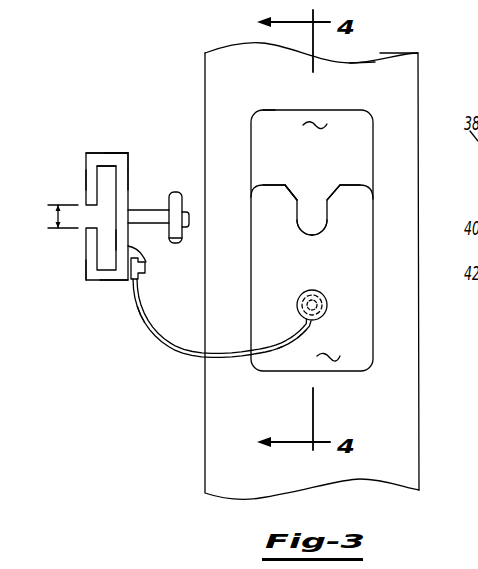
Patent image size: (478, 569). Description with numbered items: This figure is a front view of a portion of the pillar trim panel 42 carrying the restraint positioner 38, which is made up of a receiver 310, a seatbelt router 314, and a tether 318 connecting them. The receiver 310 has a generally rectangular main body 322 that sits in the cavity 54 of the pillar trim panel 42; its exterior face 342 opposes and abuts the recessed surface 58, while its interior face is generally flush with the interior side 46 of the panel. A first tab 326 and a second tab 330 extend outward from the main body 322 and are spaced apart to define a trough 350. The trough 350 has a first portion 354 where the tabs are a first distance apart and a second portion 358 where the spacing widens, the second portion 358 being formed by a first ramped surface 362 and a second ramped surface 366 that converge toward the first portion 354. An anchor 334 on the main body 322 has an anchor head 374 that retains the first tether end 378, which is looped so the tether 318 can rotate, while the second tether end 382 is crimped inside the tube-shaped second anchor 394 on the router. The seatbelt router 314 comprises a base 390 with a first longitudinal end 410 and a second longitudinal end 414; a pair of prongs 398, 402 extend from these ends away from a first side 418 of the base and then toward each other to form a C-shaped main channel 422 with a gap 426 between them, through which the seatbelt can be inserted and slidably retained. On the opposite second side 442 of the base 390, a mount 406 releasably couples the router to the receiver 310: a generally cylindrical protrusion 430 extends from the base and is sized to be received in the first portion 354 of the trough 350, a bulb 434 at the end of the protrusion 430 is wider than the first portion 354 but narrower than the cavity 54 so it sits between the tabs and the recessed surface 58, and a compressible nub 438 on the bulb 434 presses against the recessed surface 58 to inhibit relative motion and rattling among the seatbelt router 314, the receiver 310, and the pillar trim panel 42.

The restraint positioner 38 is at (168, 95).
The pillar trim panel 42 is at (393, 78).
The interior side 46 is at (365, 77).
The cavity 54 is at (263, 110).
The recessed surface 58 is at (313, 120).
The receiver 310 is at (360, 335).
The seatbelt router 314 is at (86, 157).
The tether 318 is at (173, 352).
The main body 322 is at (355, 298).
The first tab 326 is at (352, 183).
The second tab 330 is at (273, 183).
The anchor 334 is at (317, 290).
The exterior face 342 is at (326, 358).
The trough 350 is at (300, 238).
The first portion 354 is at (330, 214).
The second portion 358 is at (288, 197).
The first ramped surface 362 is at (326, 195).
The second ramped surface 366 is at (299, 195).
The anchor head 374 is at (303, 322).
The first tether end 378 is at (280, 345).
The second tether end 382 is at (132, 300).
The base 390 is at (128, 180).
The second anchor 394 is at (147, 262).
The prong 398 is at (86, 273).
The prong 402 is at (86, 180).
The mount 406 is at (178, 180).
The first longitudinal end 410 is at (117, 281).
The second longitudinal end 414 is at (123, 153).
The first side 418 is at (113, 238).
The main channel 422 is at (103, 166).
The gap 426 is at (52, 218).
The protrusion 430 is at (150, 211).
The bulb 434 is at (175, 244).
The nub 438 is at (190, 220).
The second side 442 is at (128, 162).